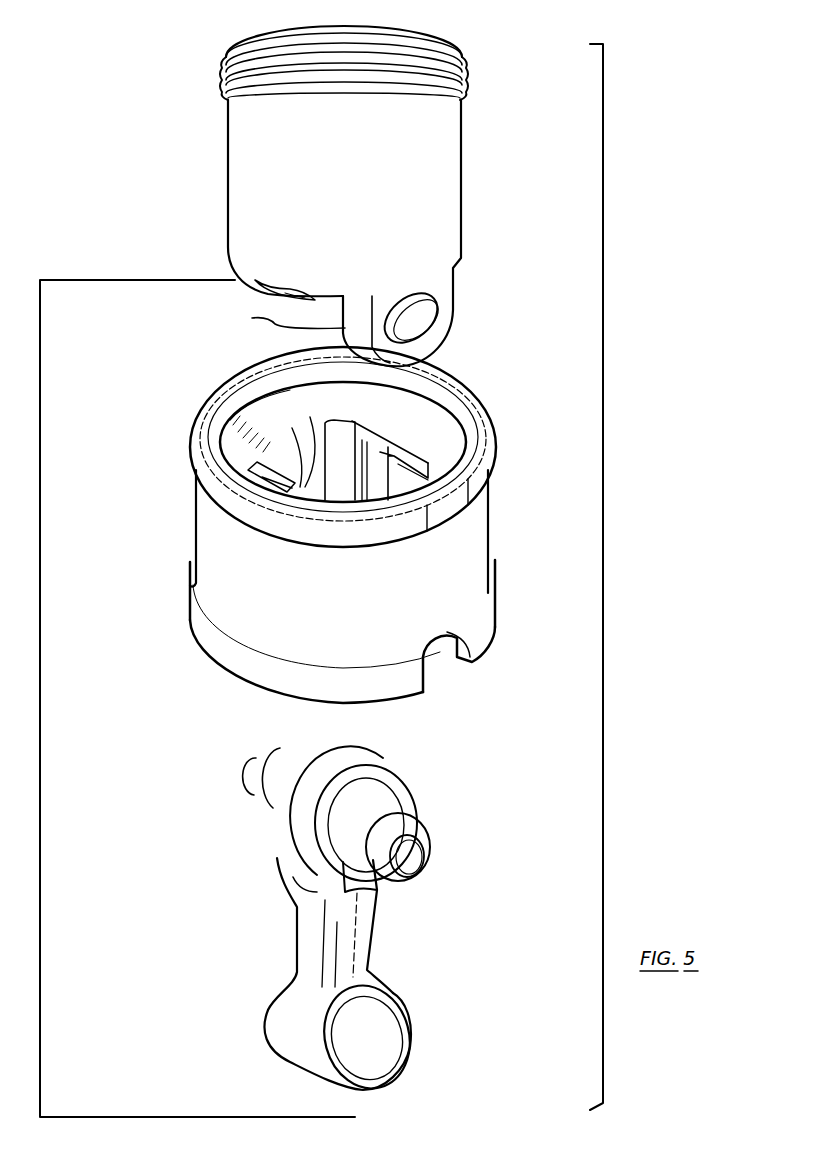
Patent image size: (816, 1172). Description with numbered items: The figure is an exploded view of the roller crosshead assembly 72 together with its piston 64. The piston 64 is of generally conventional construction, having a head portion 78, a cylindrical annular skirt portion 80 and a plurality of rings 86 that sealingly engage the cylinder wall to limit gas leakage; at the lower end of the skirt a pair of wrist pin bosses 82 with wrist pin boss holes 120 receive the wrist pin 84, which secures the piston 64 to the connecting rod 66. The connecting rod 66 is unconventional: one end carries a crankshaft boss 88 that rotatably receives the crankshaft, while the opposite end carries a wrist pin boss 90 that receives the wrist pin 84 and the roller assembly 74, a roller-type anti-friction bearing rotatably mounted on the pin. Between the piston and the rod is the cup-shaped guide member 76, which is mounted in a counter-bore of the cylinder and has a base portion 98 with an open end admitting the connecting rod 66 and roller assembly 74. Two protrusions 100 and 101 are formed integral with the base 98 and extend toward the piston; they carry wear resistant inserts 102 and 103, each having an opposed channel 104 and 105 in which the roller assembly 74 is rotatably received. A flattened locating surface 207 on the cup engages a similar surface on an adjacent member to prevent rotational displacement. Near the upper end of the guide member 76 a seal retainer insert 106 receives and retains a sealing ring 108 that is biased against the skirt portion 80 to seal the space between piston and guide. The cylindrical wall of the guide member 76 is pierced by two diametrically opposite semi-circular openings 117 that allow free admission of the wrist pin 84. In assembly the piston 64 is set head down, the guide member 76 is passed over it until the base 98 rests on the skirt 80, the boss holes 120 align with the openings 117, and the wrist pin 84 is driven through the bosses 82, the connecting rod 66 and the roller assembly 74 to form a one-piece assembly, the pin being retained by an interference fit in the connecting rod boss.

The piston 64 is at (330, 187).
The connecting rod 66 is at (312, 978).
The roller crosshead assembly 72 is at (314, 580).
The roller assembly 74 is at (358, 804).
The guide member 76 is at (345, 521).
The head portion 78 is at (246, 44).
The skirt portion 80 is at (232, 240).
The wrist pin bosses 82 is at (282, 298).
The wrist pin 84 is at (406, 836).
The rings 86 is at (222, 60).
The crankshaft boss 88 is at (285, 1047).
The wrist pin boss 90 is at (390, 798).
The base portion 98 is at (190, 618).
The protrusion 100 is at (268, 471).
The protrusion 101 is at (347, 426).
The wear resistant insert 102 is at (298, 480).
The wear resistant insert 103 is at (372, 434).
The channel 104 is at (386, 452).
The channel 105 is at (310, 470).
The seal retainer insert 106 is at (246, 392).
The sealing ring 108 is at (240, 410).
The semi-circular openings 117 is at (428, 666).
The wrist pin boss holes 120 is at (435, 320).
The locating surface 207 is at (453, 507).